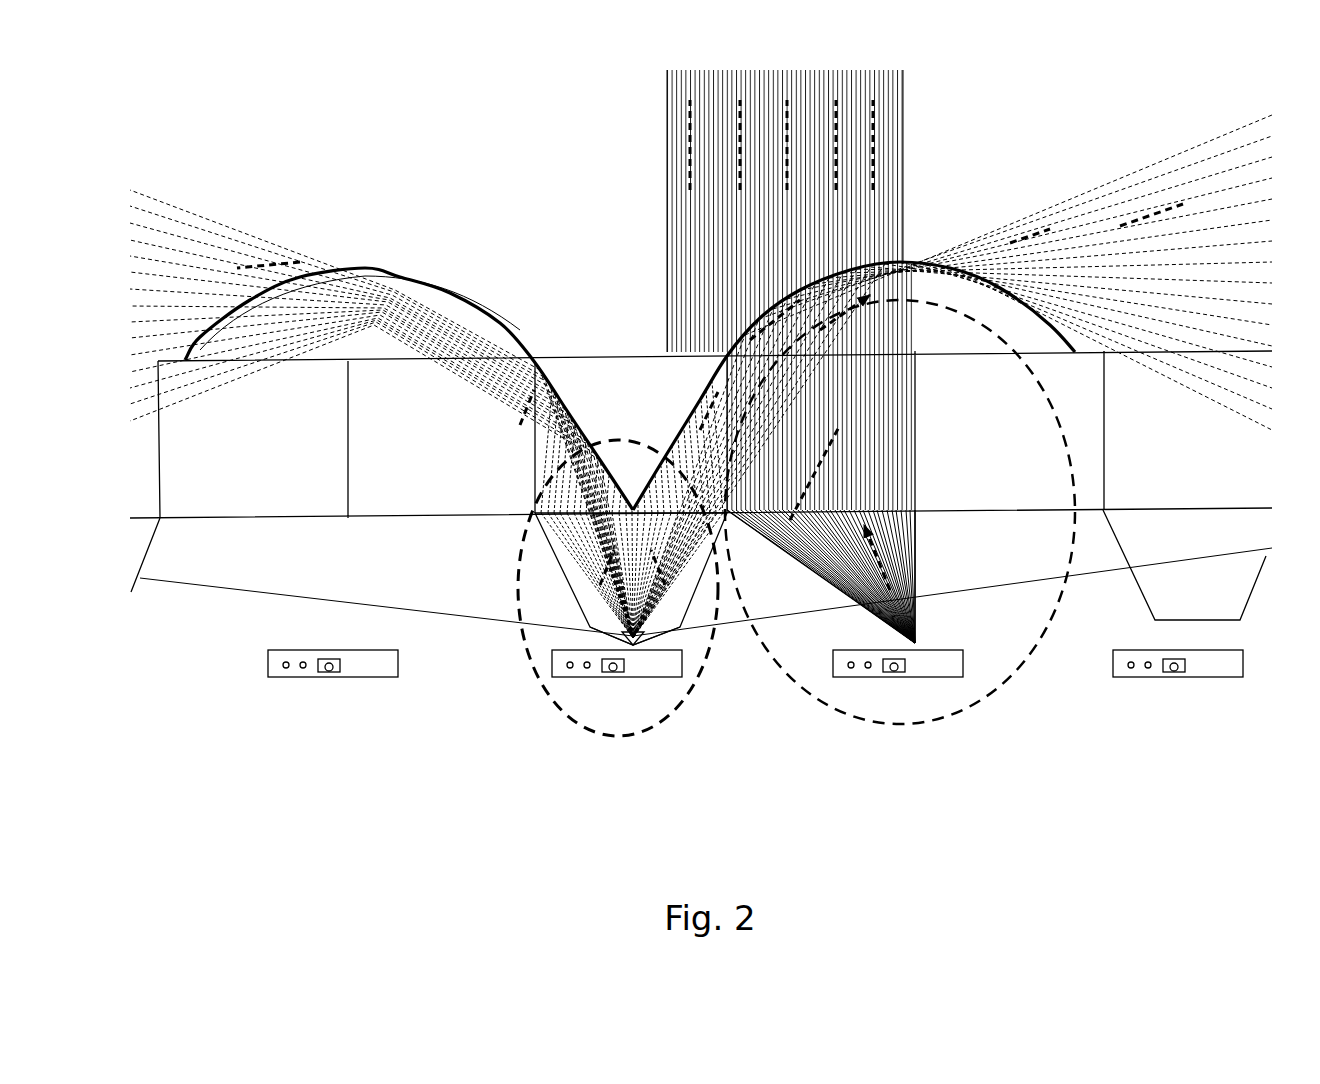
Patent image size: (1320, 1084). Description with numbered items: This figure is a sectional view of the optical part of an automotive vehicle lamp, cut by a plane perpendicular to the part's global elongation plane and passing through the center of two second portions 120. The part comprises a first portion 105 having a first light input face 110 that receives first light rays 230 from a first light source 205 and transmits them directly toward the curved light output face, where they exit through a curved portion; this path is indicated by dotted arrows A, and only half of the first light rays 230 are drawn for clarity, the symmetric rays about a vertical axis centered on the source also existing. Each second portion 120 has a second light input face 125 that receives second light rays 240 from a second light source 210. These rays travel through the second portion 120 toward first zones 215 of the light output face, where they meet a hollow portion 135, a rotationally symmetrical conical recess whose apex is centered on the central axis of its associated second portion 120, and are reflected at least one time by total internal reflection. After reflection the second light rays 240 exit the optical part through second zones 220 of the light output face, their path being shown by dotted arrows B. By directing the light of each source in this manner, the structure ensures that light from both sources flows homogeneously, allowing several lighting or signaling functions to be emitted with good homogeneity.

The first portion 105 is at (802, 705).
The first light input face 110 is at (968, 520).
The second portion 120 is at (547, 545).
The second light input face 125 is at (596, 633).
The hollow portion 135 is at (625, 423).
The first light source 205 is at (353, 659).
The second light source 210 is at (636, 659).
The first zone 215 is at (630, 283).
The second zone 220 is at (292, 272).
The first light rays 230 is at (918, 566).
The second light rays 240 is at (656, 652).